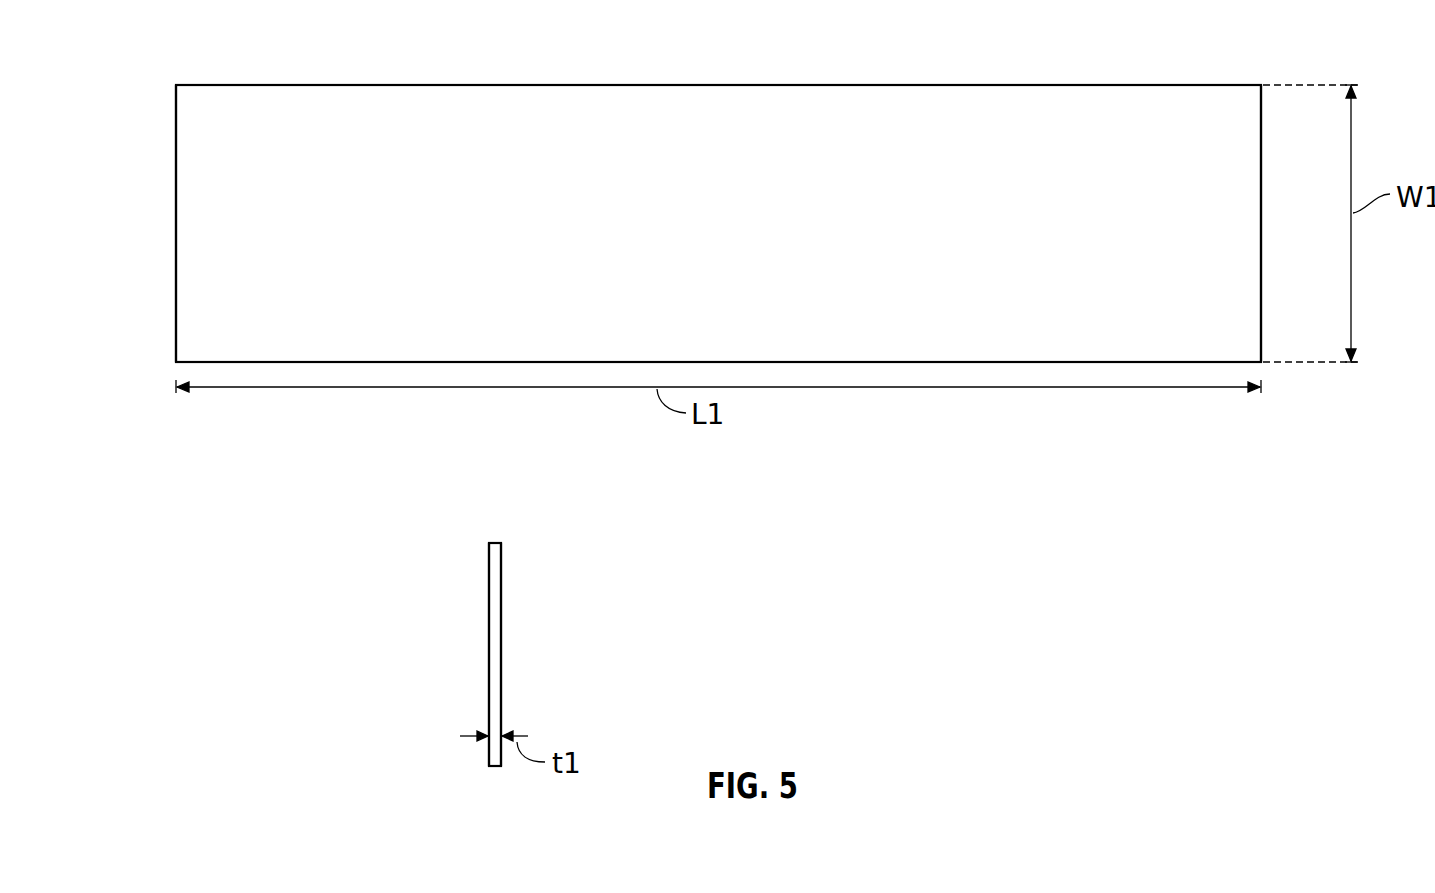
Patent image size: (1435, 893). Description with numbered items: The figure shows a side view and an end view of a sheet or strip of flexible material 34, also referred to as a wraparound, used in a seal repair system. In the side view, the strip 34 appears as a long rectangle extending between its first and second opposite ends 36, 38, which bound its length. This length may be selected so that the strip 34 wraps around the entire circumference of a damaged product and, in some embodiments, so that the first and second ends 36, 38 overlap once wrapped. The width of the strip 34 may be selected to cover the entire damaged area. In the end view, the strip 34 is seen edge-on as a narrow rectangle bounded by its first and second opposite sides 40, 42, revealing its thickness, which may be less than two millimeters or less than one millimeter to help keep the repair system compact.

The strip of flexible material 34 is at (190, 56).
The first end 36 is at (175, 205).
The second end 38 is at (1263, 157).
The first side 40 is at (488, 618).
The second side 42 is at (502, 581).